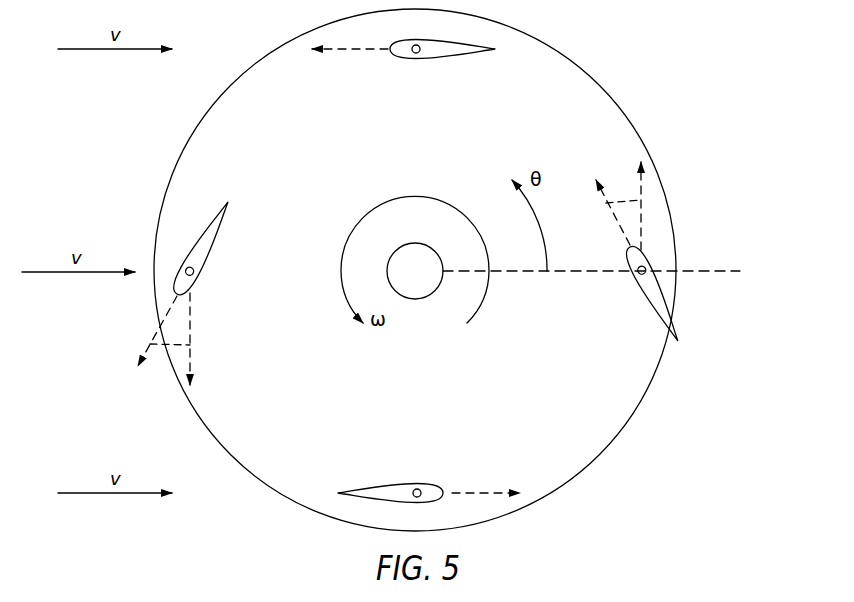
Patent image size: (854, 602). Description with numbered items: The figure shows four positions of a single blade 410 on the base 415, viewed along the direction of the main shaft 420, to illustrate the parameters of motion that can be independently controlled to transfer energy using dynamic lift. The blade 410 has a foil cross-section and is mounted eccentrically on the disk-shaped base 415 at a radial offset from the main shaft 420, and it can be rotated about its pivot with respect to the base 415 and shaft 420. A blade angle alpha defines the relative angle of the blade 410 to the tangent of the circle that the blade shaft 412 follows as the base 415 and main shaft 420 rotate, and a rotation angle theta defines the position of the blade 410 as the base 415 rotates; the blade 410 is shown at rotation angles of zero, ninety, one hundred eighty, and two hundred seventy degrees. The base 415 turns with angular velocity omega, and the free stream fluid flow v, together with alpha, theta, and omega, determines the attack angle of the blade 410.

The blade 410 is at (436, 54).
The blade shaft 412 is at (414, 55).
The base 415 is at (340, 190).
The main shaft 420 is at (434, 282).